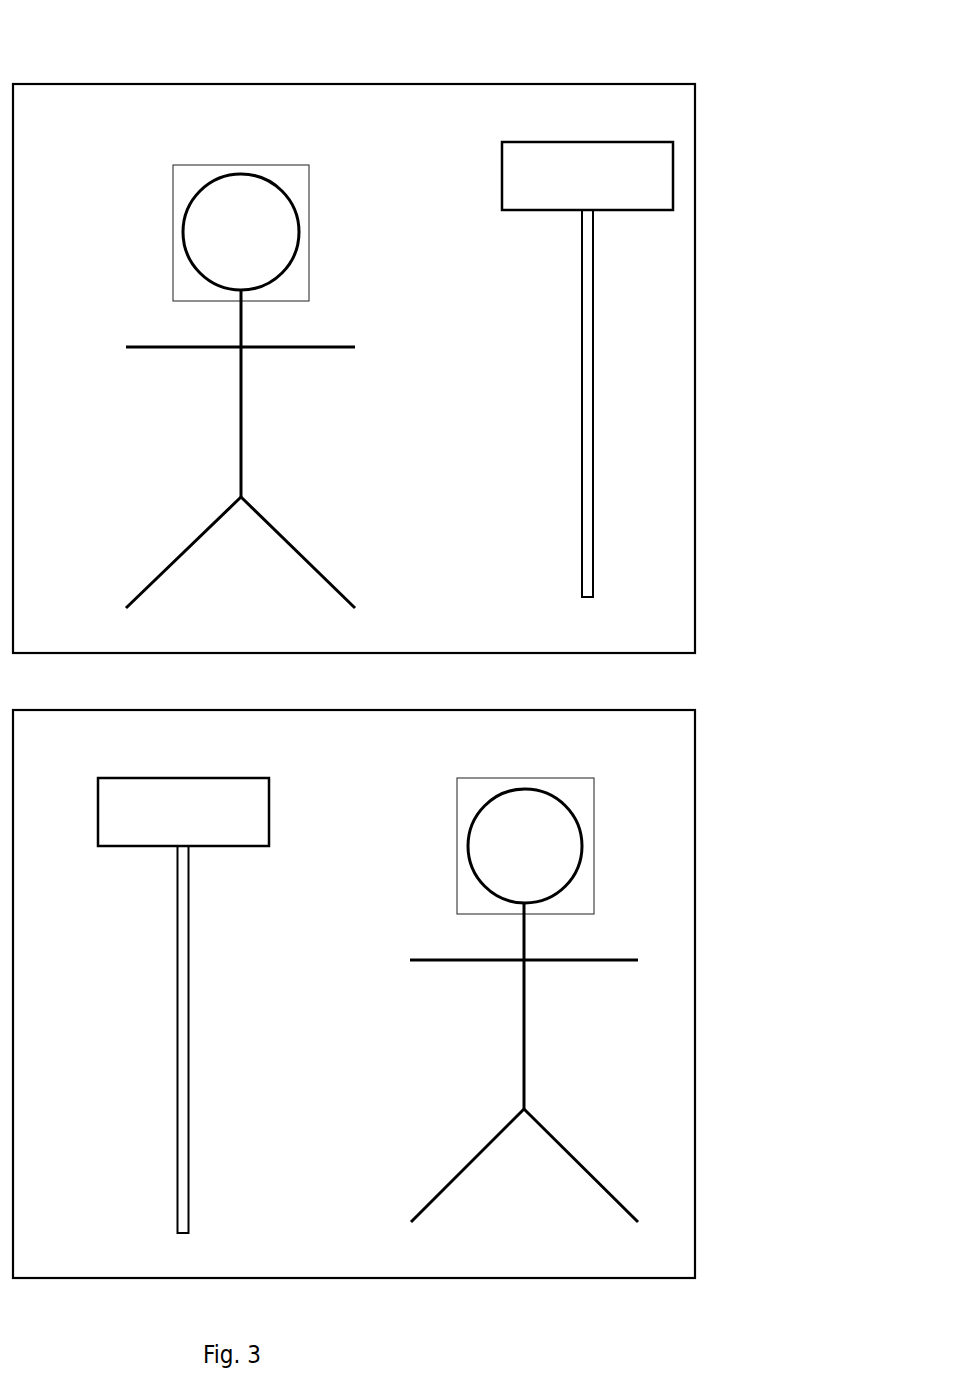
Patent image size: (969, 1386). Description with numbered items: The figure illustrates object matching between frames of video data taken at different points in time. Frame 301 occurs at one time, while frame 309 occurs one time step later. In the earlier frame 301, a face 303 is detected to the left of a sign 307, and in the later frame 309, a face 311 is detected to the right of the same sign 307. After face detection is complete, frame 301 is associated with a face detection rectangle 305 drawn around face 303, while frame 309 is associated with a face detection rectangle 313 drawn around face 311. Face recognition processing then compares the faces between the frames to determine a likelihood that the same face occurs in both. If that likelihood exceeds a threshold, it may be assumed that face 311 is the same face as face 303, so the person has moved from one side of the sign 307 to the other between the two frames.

The frame 301 is at (354, 354).
The face 303 is at (299, 242).
The face detection rectangle 305 is at (279, 163).
The sign 307 is at (675, 155).
The frame 309 is at (354, 980).
The face 311 is at (583, 856).
The face detection rectangle 313 is at (594, 801).